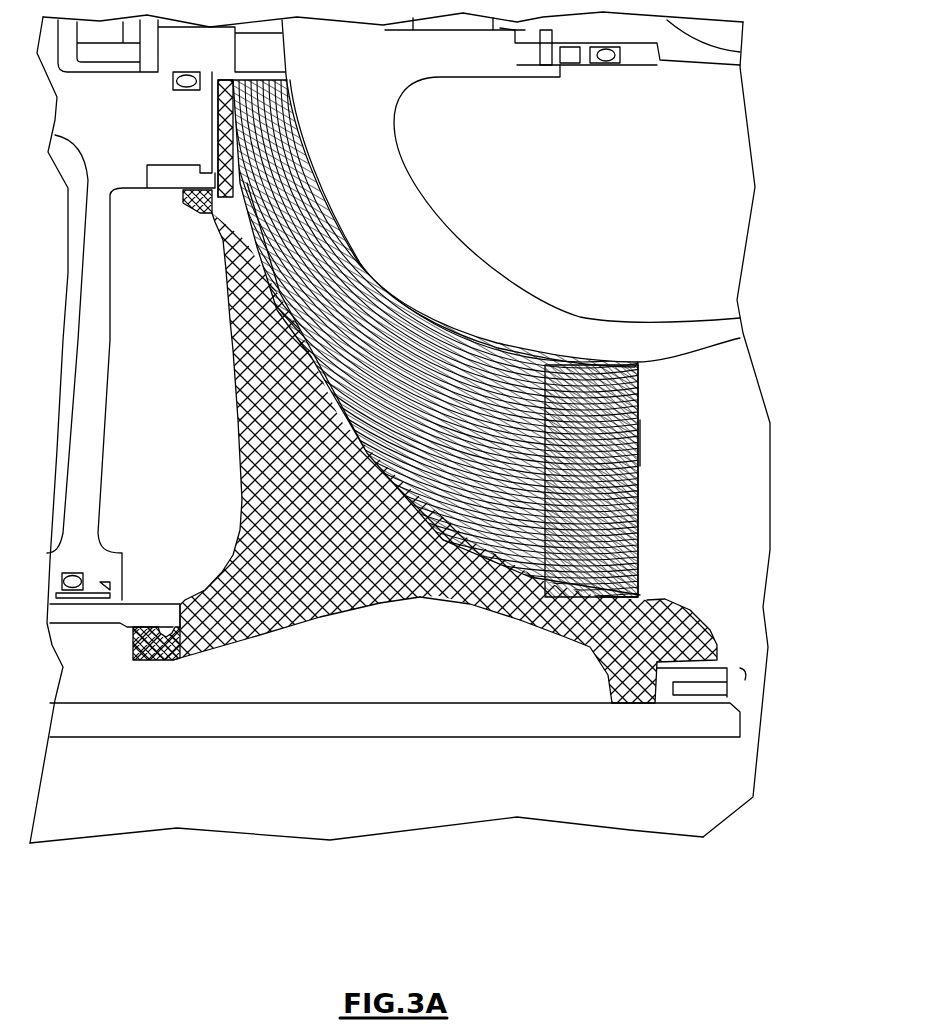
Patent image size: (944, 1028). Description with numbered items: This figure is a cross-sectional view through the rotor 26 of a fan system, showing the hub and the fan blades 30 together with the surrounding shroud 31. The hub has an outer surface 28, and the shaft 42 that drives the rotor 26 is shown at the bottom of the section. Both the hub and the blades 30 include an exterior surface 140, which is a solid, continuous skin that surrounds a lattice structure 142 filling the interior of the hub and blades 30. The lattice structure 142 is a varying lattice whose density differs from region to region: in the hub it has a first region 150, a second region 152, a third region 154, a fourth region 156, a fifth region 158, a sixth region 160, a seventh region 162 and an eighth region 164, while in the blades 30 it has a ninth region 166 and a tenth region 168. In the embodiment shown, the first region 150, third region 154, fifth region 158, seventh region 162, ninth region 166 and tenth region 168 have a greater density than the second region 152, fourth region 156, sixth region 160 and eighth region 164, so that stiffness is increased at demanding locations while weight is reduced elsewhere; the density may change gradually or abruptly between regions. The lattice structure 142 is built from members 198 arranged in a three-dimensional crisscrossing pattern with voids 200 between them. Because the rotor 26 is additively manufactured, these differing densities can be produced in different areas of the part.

The rotor 26 is at (788, 360).
The outer surface 28 is at (542, 570).
The fan blades 30 is at (495, 301).
The shroud 31 is at (418, 243).
The shaft 42 is at (375, 715).
The exterior surface 140 is at (498, 347).
The lattice structure 142 is at (337, 600).
The first region 150 is at (183, 638).
The second region 152 is at (268, 630).
The third region 154 is at (620, 705).
The fourth region 156 is at (717, 632).
The fifth region 158 is at (486, 499).
The sixth region 160 is at (243, 377).
The seventh region 162 is at (203, 228).
The eighth region 164 is at (228, 132).
The ninth region 166 is at (340, 240).
The tenth region 168 is at (638, 405).
The members 198 is at (384, 595).
The voids 200 is at (410, 594).